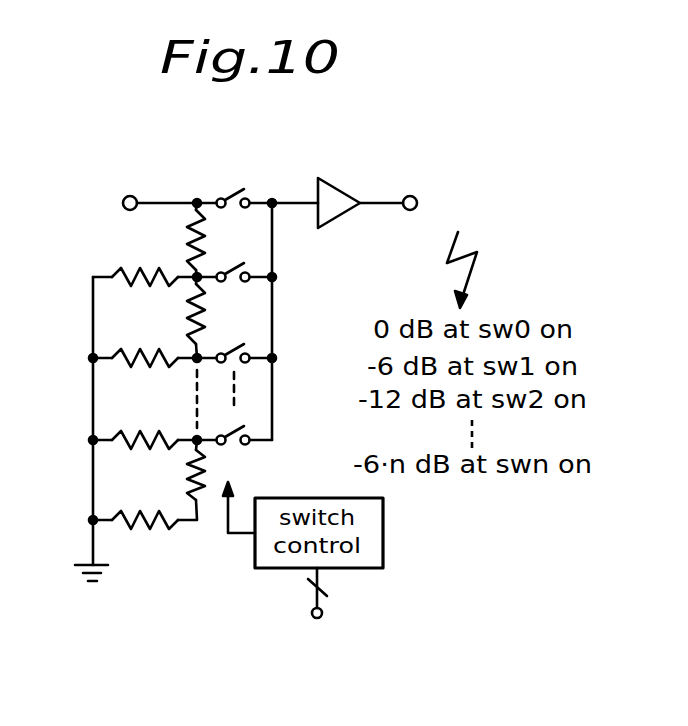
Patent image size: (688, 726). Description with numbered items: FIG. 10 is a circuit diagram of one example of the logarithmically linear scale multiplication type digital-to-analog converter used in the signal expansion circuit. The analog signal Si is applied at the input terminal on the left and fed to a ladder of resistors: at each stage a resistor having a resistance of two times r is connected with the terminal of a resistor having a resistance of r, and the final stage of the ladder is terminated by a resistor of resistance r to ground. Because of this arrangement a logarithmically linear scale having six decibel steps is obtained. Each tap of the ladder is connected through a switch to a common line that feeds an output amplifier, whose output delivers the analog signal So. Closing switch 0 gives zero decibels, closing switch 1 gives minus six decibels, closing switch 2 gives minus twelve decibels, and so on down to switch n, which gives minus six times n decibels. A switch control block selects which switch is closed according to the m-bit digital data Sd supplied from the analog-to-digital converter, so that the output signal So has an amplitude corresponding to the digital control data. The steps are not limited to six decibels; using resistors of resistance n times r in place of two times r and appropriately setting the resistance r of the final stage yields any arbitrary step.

The switch sw0 0 is at (234, 179).
The switch sw1 1 is at (234, 254).
The switch sw2 2 is at (234, 337).
The switch swn n is at (234, 452).
The m-bit digital control data m is at (331, 588).
The resistor having a resistance of r is at (149, 366).
The analog signal Si is at (142, 204).
The analog signal So is at (437, 204).
The m-bit digital data Sd is at (318, 632).